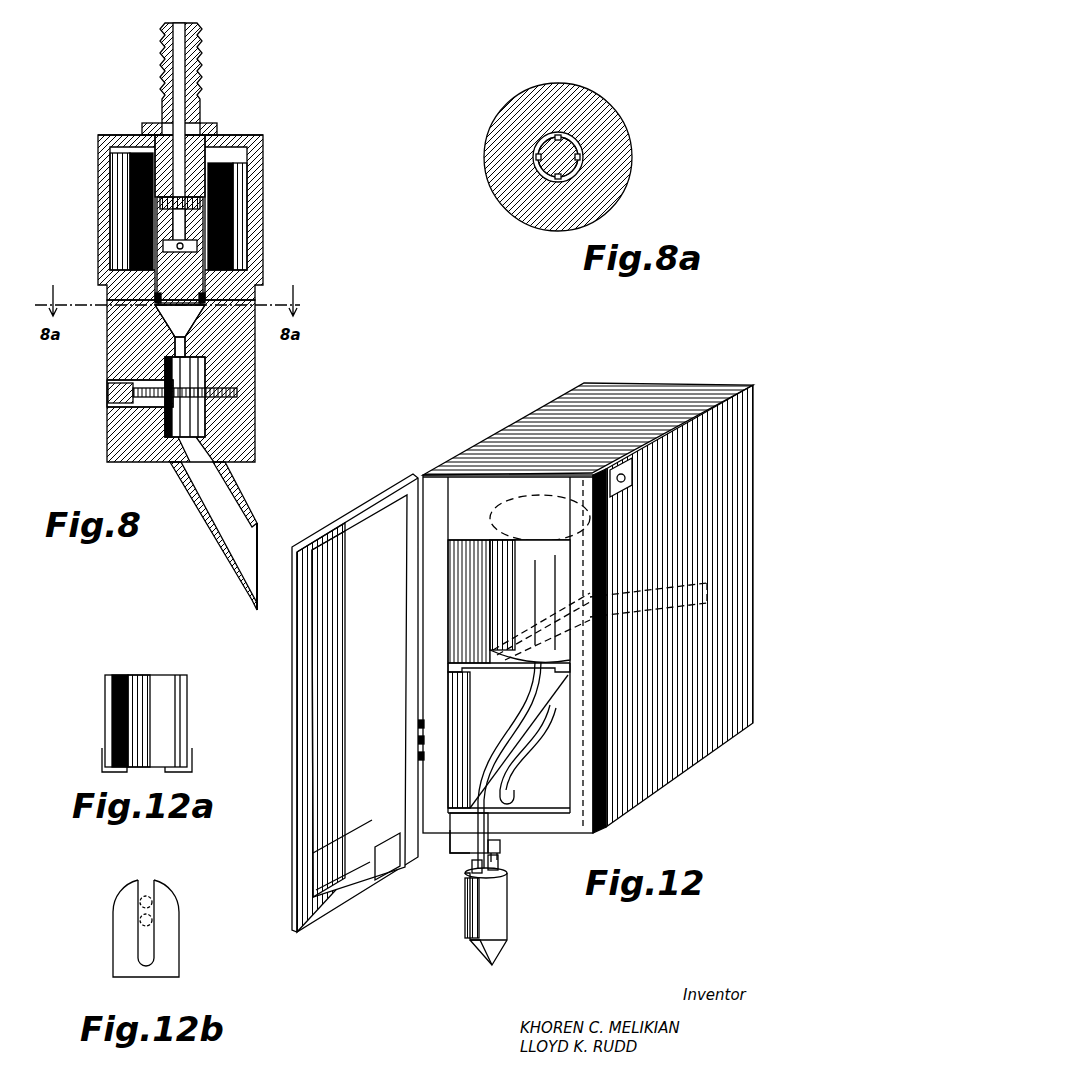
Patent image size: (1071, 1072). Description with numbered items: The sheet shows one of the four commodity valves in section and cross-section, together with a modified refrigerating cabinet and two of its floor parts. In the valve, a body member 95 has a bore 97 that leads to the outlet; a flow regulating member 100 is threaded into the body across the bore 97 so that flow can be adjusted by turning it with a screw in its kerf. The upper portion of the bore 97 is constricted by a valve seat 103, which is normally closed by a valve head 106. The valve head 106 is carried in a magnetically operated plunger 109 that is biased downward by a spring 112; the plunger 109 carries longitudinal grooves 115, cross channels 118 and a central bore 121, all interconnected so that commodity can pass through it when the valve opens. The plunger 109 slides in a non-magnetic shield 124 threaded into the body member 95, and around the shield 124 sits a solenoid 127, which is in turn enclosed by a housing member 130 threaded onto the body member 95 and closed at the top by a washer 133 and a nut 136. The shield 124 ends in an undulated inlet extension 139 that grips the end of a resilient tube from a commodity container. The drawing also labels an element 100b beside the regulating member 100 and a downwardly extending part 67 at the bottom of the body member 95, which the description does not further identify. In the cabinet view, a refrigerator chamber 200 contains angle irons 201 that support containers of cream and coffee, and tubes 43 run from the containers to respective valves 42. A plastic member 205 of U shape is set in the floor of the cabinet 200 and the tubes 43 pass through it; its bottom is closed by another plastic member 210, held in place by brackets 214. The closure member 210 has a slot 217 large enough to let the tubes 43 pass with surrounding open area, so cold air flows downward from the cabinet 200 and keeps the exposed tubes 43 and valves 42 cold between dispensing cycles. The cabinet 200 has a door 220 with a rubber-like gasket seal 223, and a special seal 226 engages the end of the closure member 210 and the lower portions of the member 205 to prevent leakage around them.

In FIG. 8, the undulated inlet extension 139 is at (193, 88).
In FIG. 8, the nut 136 is at (218, 125).
In FIG. 8, the washer 133 is at (247, 137).
In FIG. 8, the housing member 130 is at (263, 173).
In FIG. 8, the non-magnetic shield 124 is at (110, 158).
In FIG. 8, the central bore 121 is at (130, 217).
In FIG. 8, the cross channels 118 is at (140, 247).
In FIG. 8, the spring 112 is at (157, 300).
In FIG. 8A, the spring 112 is at (543, 173).
In FIG. 8, the solenoid 127 is at (233, 210).
In FIG. 8, the longitudinal grooves 115 is at (245, 250).
In FIG. 8A, the longitudinal grooves 115 is at (538, 158).
In FIG. 8, the valve head 106 is at (120, 343).
In FIG. 8, the valve seat 103 is at (193, 347).
In FIG. 8, the side bore 100b is at (107, 392).
In FIG. 8, the flow regulating member 100 is at (140, 415).
In FIG. 8, the bore 97 is at (193, 420).
In FIG. 8, the body member 95 is at (127, 448).
In FIG. 8A, the body member 95 is at (495, 145).
In FIG. 8, the nozzle 67 is at (220, 507).
In FIG. 8A, the magnetically operated plunger 109 is at (577, 142).
In FIG. 12, the refrigerator chamber 200 is at (745, 436).
In FIG. 12, the angle irons 201 is at (550, 673).
In FIG. 12, the tubes 43 is at (548, 720).
In FIG. 12B, the tubes 43 is at (152, 900).
In FIG. 12, the closure member 210 is at (460, 853).
In FIG. 12B, the closure member 210 is at (170, 962).
In FIG. 12, the plastic member of U shape 205 is at (448, 840).
In FIG. 12A, the plastic member of U shape 205 is at (108, 693).
In FIG. 12, the brackets 214 is at (500, 845).
In FIG. 12A, the brackets 214 is at (190, 757).
In FIG. 12, the valves 42 is at (467, 917).
In FIG. 12, the door 220 is at (390, 705).
In FIG. 12, the gasket seal 223 is at (315, 850).
In FIG. 12, the special seal 226 is at (387, 880).
In FIG. 12B, the slot 217 is at (145, 882).